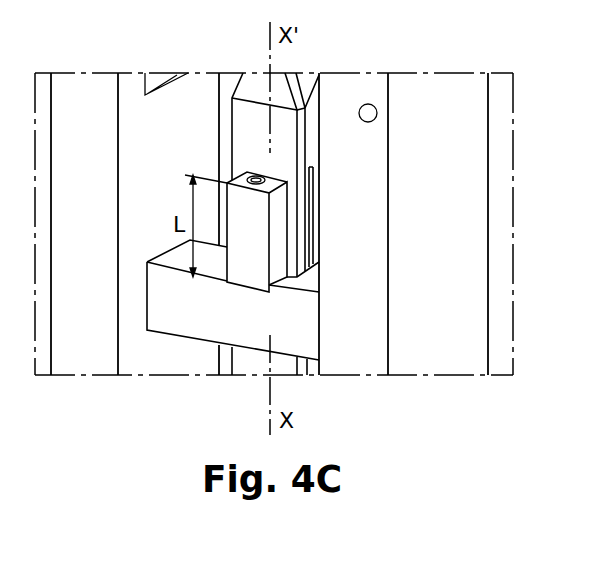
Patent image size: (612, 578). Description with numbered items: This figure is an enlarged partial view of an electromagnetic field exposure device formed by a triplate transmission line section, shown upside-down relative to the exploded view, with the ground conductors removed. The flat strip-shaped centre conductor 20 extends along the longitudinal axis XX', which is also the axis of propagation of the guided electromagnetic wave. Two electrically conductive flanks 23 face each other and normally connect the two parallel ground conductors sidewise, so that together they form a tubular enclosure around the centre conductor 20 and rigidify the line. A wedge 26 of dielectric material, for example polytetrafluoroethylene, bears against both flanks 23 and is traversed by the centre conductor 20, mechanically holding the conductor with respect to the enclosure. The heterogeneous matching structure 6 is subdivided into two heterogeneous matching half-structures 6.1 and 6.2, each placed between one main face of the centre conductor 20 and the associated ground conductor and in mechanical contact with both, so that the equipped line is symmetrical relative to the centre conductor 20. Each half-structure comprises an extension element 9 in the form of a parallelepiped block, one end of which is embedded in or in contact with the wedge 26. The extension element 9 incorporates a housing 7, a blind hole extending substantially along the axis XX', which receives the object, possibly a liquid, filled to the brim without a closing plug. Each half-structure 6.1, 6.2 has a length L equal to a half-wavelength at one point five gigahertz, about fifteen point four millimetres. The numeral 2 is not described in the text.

The device 2 is at (25, 224).
The flank 23 is at (85, 182).
The centre conductor 20 is at (255, 120).
The housing 7 is at (256, 178).
The extension element 9 is at (247, 270).
The wedge 26 is at (172, 318).
The heterogeneous matching structure 6 is at (443, 165).
The heterogeneous matching half-structure 6.1 is at (313, 192).
The heterogeneous matching half-structure 6.2 is at (253, 228).